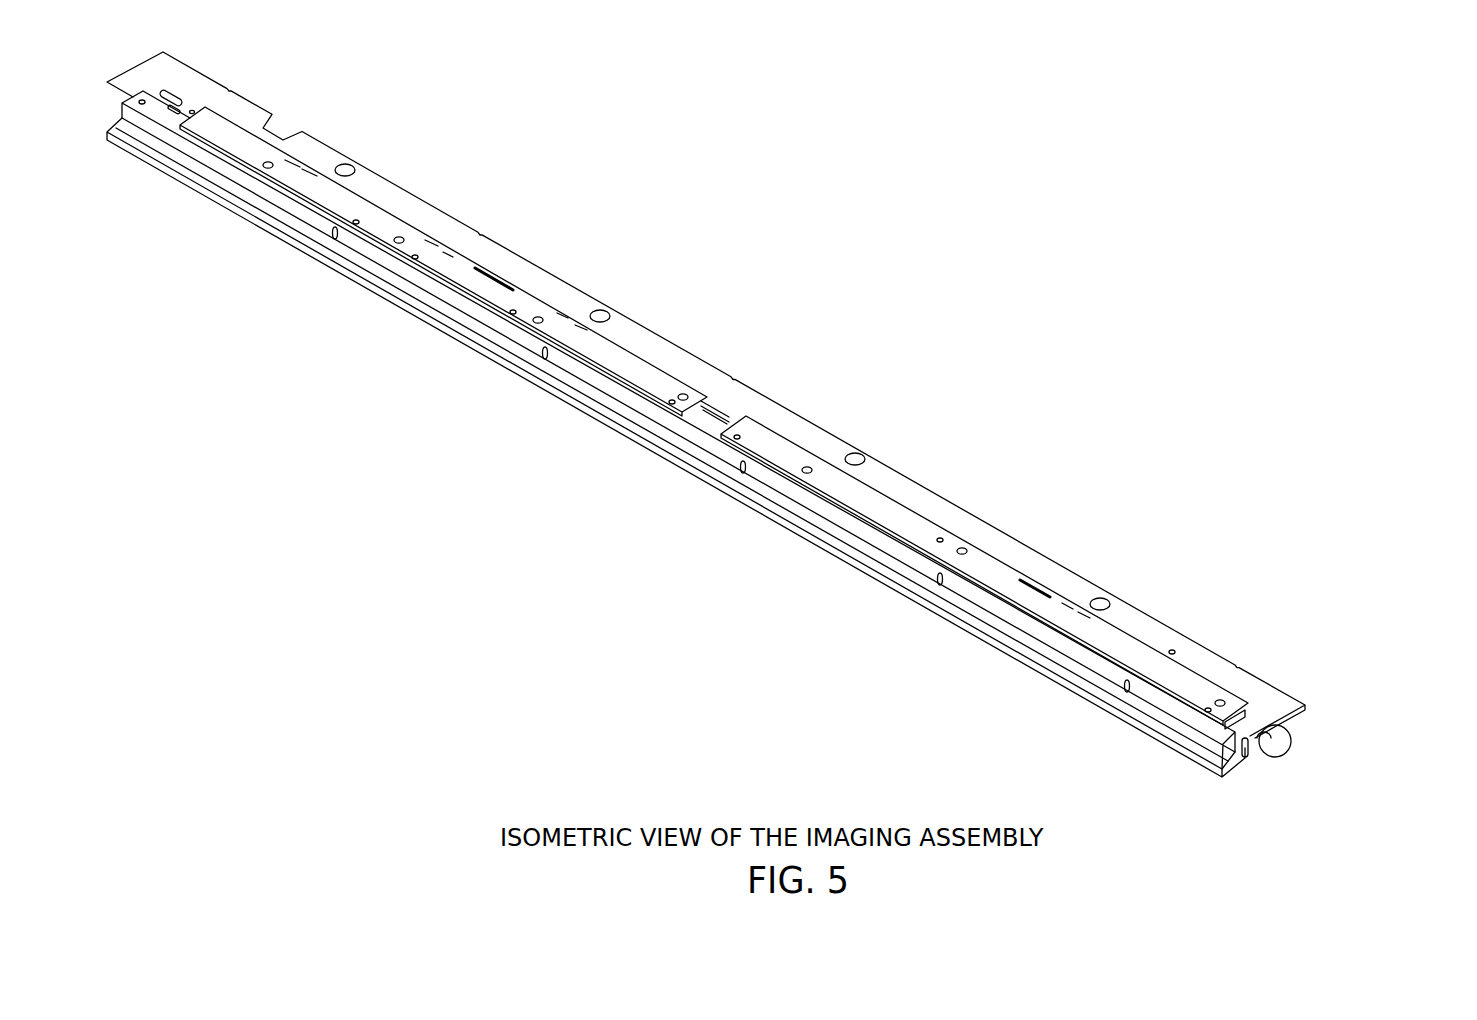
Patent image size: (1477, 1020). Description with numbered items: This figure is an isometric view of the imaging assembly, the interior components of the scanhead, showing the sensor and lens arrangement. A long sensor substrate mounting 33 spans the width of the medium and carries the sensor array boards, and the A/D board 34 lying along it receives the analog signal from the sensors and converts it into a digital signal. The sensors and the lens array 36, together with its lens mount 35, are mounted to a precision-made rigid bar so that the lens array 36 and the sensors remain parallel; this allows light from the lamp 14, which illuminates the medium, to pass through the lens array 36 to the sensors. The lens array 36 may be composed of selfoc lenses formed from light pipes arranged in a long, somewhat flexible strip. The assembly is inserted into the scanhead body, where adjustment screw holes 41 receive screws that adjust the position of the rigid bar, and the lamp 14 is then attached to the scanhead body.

The sensor substrate mounting 33 is at (1270, 683).
The A/D board 34 is at (1195, 670).
The adjustment screw holes 41 is at (1142, 697).
The lens mount 35 is at (1207, 763).
The lamp 14 is at (1290, 751).
The lens array 36 is at (1247, 760).